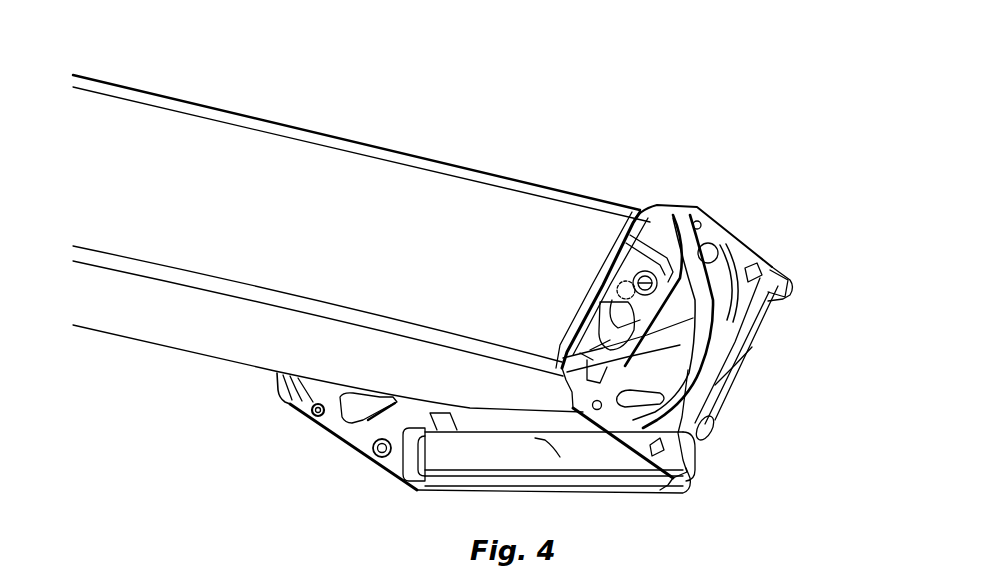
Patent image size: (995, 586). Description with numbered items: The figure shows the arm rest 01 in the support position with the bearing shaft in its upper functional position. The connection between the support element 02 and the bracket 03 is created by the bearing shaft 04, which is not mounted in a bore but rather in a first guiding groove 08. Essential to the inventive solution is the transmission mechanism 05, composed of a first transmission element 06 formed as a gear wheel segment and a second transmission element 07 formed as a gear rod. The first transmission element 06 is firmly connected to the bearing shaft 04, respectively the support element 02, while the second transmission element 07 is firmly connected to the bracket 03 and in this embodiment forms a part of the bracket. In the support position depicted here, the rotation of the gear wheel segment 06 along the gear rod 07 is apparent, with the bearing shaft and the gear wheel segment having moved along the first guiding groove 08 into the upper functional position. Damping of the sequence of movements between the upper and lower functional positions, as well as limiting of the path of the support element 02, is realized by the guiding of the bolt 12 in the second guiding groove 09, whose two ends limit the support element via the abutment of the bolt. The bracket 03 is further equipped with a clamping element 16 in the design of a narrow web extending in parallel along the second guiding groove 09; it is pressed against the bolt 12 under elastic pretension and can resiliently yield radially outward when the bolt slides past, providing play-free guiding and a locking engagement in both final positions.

The arm rest 01 is at (725, 48).
The support element 02 is at (217, 163).
The bracket 03 is at (720, 405).
The bearing shaft 04 is at (632, 280).
The transmission mechanism 05 is at (607, 254).
The first transmission element 06 is at (617, 278).
The second transmission element 07 is at (612, 305).
The first guiding groove 08 is at (735, 352).
The second guiding groove 09 is at (697, 440).
The bolt 12 is at (713, 248).
The clamping element 16 is at (730, 306).